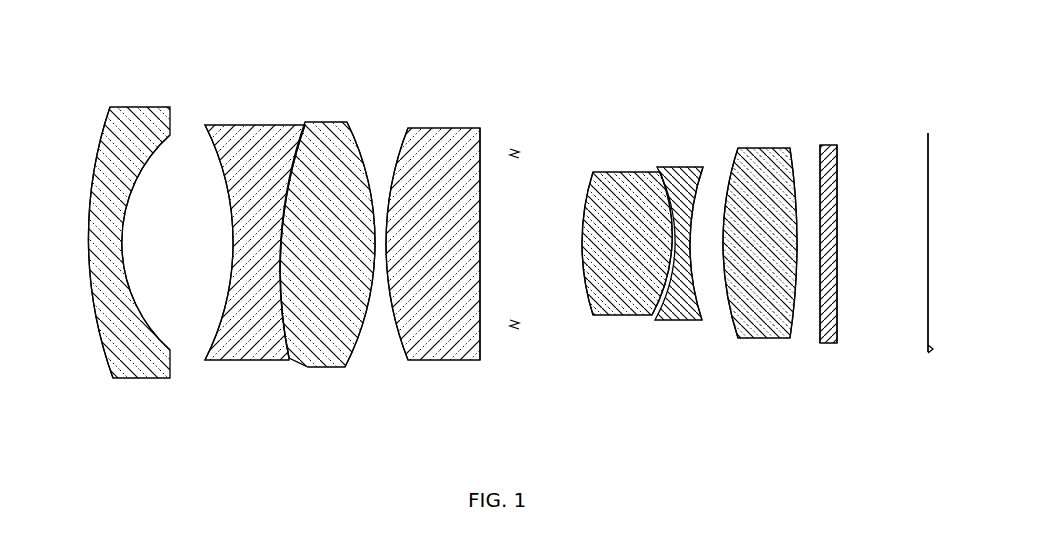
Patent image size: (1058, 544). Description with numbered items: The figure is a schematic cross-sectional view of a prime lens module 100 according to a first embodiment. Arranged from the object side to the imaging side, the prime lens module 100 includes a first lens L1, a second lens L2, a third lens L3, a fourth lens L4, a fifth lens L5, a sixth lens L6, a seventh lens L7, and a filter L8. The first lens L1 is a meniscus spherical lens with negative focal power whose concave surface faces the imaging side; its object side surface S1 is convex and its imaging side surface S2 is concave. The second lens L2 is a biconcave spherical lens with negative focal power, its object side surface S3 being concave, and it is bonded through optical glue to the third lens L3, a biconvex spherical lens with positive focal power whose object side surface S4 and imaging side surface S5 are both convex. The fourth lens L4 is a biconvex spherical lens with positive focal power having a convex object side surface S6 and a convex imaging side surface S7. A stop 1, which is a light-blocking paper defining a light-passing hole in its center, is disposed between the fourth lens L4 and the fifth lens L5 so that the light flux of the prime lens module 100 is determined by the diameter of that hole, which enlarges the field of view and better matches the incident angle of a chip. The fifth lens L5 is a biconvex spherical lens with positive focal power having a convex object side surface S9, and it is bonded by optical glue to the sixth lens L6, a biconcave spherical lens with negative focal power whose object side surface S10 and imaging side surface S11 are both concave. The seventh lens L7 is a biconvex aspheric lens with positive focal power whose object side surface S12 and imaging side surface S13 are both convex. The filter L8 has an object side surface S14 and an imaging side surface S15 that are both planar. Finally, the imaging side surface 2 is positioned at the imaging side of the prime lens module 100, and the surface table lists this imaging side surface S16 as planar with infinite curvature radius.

The prime lens module 100 is at (77, 36).
The first lens L1 is at (143, 140).
The second lens L2 is at (250, 130).
The third lens L3 is at (336, 140).
The fourth lens L4 is at (440, 135).
The fifth lens L5 is at (625, 175).
The sixth lens L6 is at (676, 170).
The seventh lens L7 is at (772, 155).
The filter L8 is at (833, 148).
The stop 1 is at (515, 152).
The imaging side surface 2 is at (929, 150).
The object side surface of the first lens S1 is at (104, 348).
The imaging side surface of the first lens S2 is at (163, 345).
The object side surface of the second lens S3 is at (208, 335).
The object side surface of the third lens S4 is at (289, 350).
The imaging side surface of the third lens S5 is at (368, 340).
The object side surface of the fourth lens S6 is at (397, 342).
The imaging side surface of the fourth lens S7 is at (483, 340).
The object side surface of the fifth lens S9 is at (584, 315).
The object side surface of the sixth lens S10 is at (650, 316).
The imaging side surface of the sixth lens S11 is at (707, 318).
The object side surface of the seventh lens S12 is at (730, 330).
The imaging side surface of the seventh lens S13 is at (797, 322).
The object side surface of the filter S14 is at (816, 330).
The imaging side surface of the filter S15 is at (838, 328).
The imaging side surface S16 is at (928, 340).